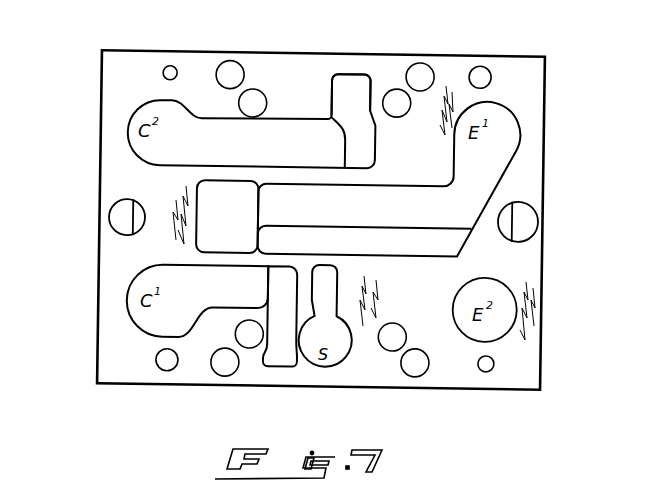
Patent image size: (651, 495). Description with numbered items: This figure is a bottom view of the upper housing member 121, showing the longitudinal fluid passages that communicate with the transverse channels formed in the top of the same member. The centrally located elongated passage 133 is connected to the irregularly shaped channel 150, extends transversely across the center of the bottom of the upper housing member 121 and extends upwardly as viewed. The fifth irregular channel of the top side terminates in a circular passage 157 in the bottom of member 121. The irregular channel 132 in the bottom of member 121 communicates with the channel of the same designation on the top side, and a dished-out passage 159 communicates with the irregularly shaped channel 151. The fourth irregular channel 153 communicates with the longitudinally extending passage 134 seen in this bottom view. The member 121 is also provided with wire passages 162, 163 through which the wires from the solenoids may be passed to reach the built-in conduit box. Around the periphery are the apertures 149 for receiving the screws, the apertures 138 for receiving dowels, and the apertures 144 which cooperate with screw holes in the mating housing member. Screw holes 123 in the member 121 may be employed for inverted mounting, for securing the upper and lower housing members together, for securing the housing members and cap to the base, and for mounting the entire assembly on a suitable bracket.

The upper housing member 121 is at (546, 310).
The screw holes 123 is at (240, 63).
The irregular channel 132 is at (342, 363).
The elongated passage 133 is at (505, 160).
The longitudinally extending passage 134 is at (293, 121).
The apertures 138 is at (171, 67).
The apertures 144 is at (481, 69).
The apertures 149 is at (262, 92).
The irregularly shaped channel 150 is at (231, 250).
The irregularly shaped channel 151 is at (275, 362).
The fourth irregular channel 153 is at (351, 74).
The circular passage 157 is at (502, 331).
The dished-out passage 159 is at (140, 313).
The wire passage 162 is at (538, 234).
The wire passage 163 is at (109, 212).